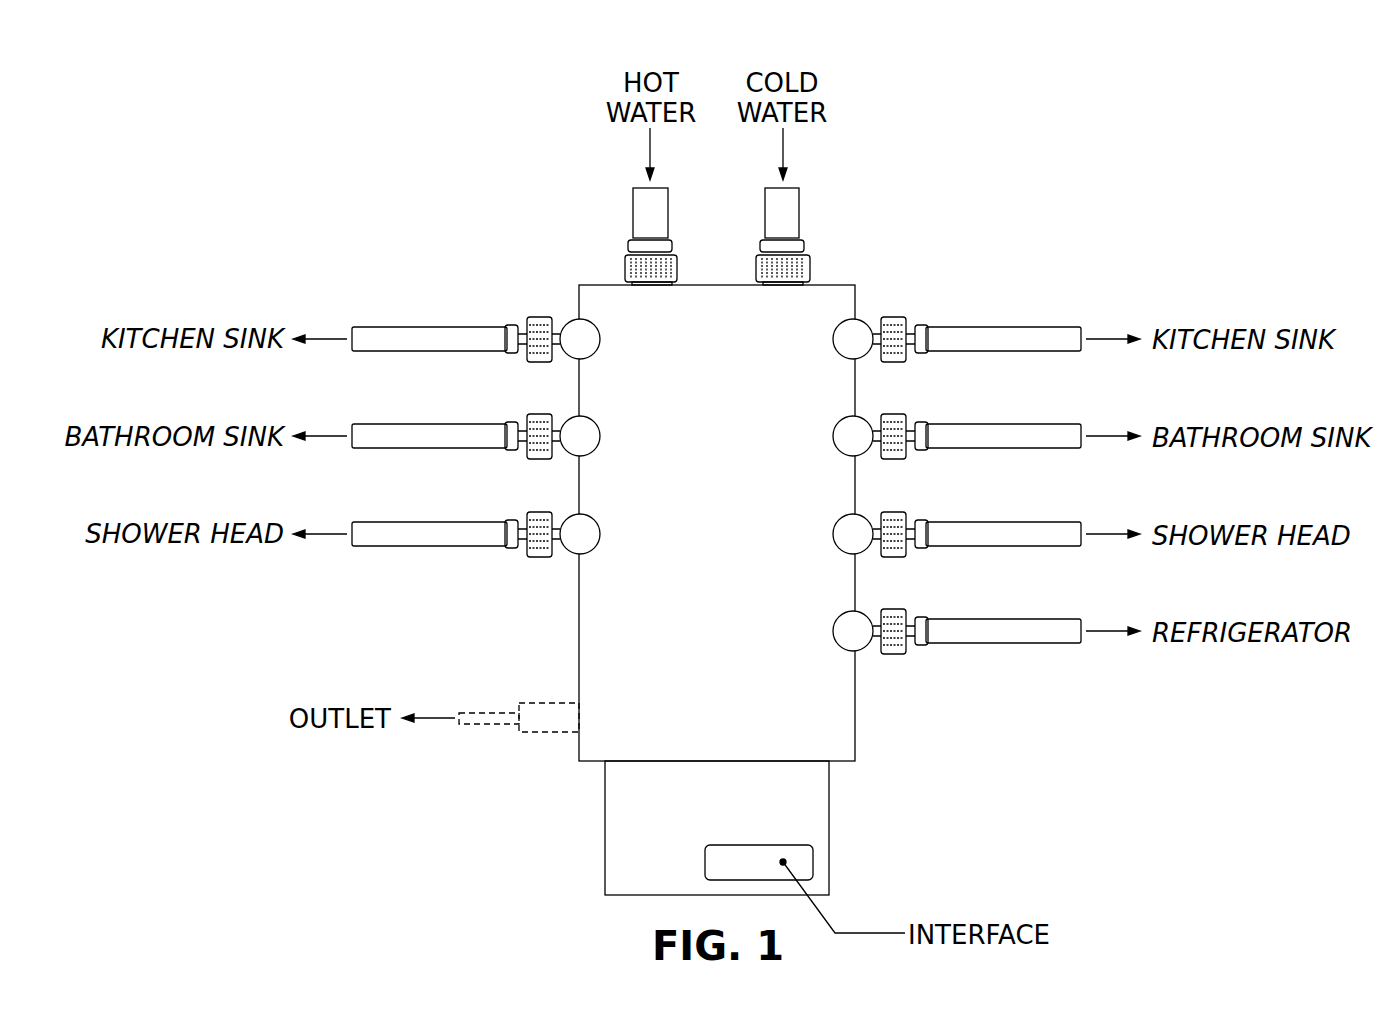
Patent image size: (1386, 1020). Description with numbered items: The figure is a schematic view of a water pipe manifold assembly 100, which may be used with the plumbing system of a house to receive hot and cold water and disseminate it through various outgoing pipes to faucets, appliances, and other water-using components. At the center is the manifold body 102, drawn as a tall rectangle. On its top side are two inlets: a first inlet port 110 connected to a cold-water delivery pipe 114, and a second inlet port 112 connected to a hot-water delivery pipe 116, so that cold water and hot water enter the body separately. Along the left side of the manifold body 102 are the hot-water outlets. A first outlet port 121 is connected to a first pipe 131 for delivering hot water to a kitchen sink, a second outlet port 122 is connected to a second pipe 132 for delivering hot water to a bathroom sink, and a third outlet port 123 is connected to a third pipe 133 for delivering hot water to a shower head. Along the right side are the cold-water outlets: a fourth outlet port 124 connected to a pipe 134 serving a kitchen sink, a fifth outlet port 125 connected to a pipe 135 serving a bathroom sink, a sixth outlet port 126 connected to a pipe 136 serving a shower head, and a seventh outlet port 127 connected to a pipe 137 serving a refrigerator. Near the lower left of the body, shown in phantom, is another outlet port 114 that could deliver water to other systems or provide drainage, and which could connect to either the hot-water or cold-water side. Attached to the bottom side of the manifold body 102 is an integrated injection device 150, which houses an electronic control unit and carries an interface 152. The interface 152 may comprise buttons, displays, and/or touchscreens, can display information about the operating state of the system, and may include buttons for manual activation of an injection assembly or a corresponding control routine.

The water pipe manifold assembly 100 is at (476, 125).
The manifold body 102 is at (856, 708).
The first inlet port 110 is at (812, 268).
The second inlet port 112 is at (624, 268).
The cold-water delivery pipe / outlet port 114 is at (800, 213).
The hot-water delivery pipe 116 is at (632, 213).
The first outlet port 121 is at (600, 338).
The second outlet port 122 is at (600, 436).
The third outlet port 123 is at (600, 533).
The fourth outlet port 124 is at (833, 338).
The fifth outlet port 125 is at (833, 436).
The sixth outlet port 126 is at (833, 533).
The seventh outlet port 127 is at (833, 630).
The first pipe 131 is at (440, 325).
The second pipe 132 is at (425, 423).
The third pipe 133 is at (440, 521).
The pipe 134 is at (1018, 325).
The pipe 135 is at (997, 423).
The pipe 136 is at (1020, 521).
The pipe 137 is at (997, 618).
The integrated injection device 150 is at (829, 825).
The interface 152 is at (813, 862).